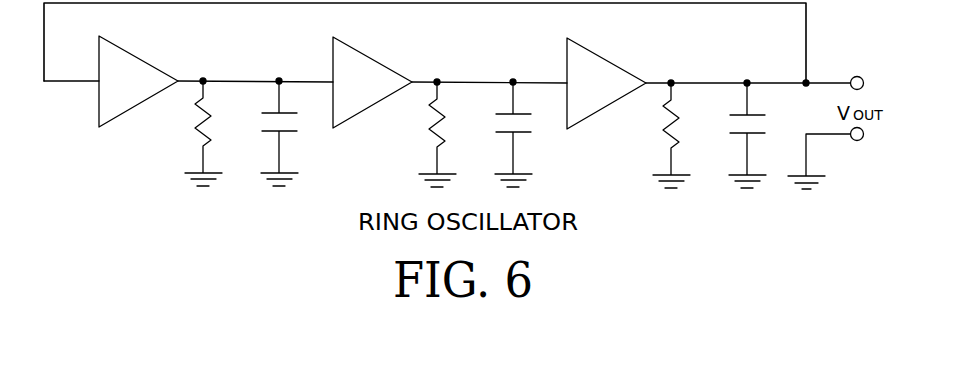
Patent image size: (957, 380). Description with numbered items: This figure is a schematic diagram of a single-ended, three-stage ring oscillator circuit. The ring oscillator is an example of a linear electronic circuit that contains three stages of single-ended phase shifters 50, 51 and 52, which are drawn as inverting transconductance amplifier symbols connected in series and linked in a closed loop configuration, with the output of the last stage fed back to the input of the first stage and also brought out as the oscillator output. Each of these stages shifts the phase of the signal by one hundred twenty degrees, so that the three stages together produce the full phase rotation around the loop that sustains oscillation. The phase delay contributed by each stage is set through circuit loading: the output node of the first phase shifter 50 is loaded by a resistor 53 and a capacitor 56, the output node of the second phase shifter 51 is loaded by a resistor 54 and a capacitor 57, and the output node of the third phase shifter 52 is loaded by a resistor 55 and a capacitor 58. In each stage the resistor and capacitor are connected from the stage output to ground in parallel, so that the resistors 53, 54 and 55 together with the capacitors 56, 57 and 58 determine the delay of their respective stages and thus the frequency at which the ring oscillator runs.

The single-ended phase shifter 50 is at (147, 63).
The single-ended phase shifter 51 is at (389, 79).
The single-ended phase shifter 52 is at (623, 80).
The resistor 53 is at (203, 138).
The resistor 54 is at (423, 133).
The resistor 55 is at (657, 134).
The capacitor 56 is at (273, 133).
The capacitor 57 is at (502, 133).
The capacitor 58 is at (736, 134).